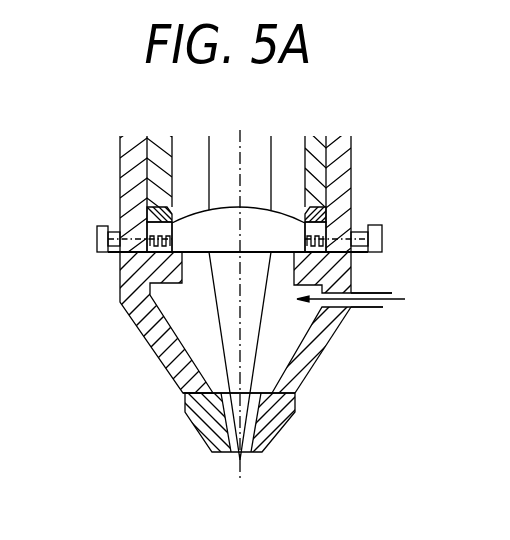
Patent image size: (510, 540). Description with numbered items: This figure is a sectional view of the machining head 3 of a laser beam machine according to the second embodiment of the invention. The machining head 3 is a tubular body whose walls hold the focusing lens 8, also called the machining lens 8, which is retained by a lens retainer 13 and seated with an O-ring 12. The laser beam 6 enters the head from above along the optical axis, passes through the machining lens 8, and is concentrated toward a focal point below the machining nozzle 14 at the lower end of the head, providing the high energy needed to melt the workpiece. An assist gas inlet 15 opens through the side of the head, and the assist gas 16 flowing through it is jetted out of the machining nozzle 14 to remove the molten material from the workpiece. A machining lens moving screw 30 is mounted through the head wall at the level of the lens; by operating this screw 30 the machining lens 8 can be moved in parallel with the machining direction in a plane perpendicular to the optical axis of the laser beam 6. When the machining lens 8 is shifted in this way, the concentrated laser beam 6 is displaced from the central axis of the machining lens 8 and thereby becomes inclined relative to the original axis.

The machining head 3 is at (345, 170).
The laser beam 6 is at (259, 150).
The focusing lens 8 is at (289, 213).
The O-ring 12 is at (327, 221).
The lens retainer 13 is at (160, 152).
The machining nozzle 14 is at (296, 406).
The assist gas inlet 15 is at (372, 292).
The assist gas 16 is at (383, 308).
The machining lens moving screw 30 is at (383, 238).